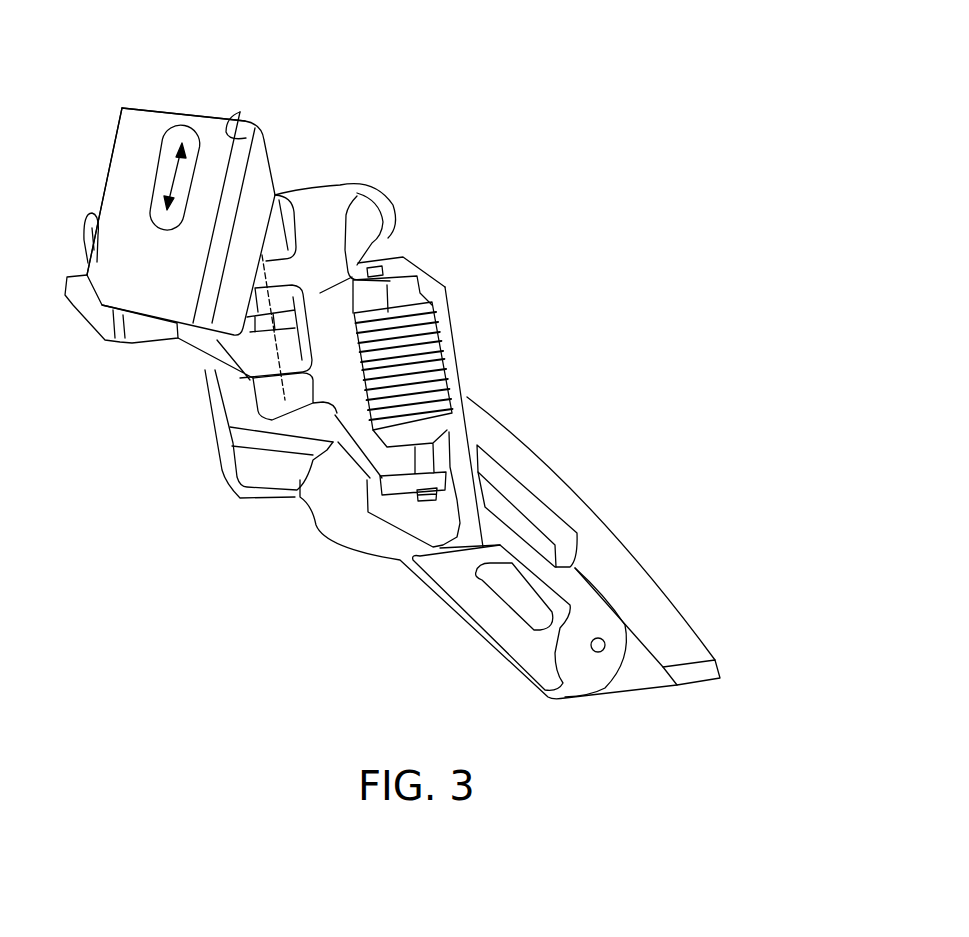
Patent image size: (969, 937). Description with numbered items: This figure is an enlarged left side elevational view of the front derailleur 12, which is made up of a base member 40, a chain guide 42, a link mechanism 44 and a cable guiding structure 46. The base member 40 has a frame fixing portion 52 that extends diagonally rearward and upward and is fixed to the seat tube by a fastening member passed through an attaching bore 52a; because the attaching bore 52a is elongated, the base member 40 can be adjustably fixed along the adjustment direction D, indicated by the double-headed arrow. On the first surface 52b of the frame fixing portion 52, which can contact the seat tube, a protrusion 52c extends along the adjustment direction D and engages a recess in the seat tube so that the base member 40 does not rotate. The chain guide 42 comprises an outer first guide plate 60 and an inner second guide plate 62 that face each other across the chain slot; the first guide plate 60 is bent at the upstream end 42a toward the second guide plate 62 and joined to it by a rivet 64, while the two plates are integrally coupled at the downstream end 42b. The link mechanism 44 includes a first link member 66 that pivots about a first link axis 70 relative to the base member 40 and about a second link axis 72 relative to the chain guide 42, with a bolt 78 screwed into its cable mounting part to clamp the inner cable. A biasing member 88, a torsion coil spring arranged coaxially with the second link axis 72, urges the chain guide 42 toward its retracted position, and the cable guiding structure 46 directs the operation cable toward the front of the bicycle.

The front derailleur 12 is at (553, 117).
The base member 40 is at (139, 78).
The chain guide 42 is at (549, 455).
The upstream end 42a is at (718, 665).
The downstream end 42b is at (208, 477).
The link mechanism 44 is at (326, 449).
The cable guiding structure 46 is at (94, 209).
The frame fixing portion 52 is at (199, 104).
The attaching bore 52a is at (177, 142).
The first surface 52b is at (145, 124).
The protrusion 52c is at (238, 113).
The first guide plate 60 is at (593, 517).
The second guide plate 62 is at (413, 573).
The rivet 64 is at (597, 653).
The first link member 66 is at (407, 259).
The first link axis 70 is at (223, 365).
The second link axis 72 is at (453, 302).
The bolt 78 is at (392, 212).
The biasing member 88 is at (445, 383).
The adjustment direction D is at (198, 181).